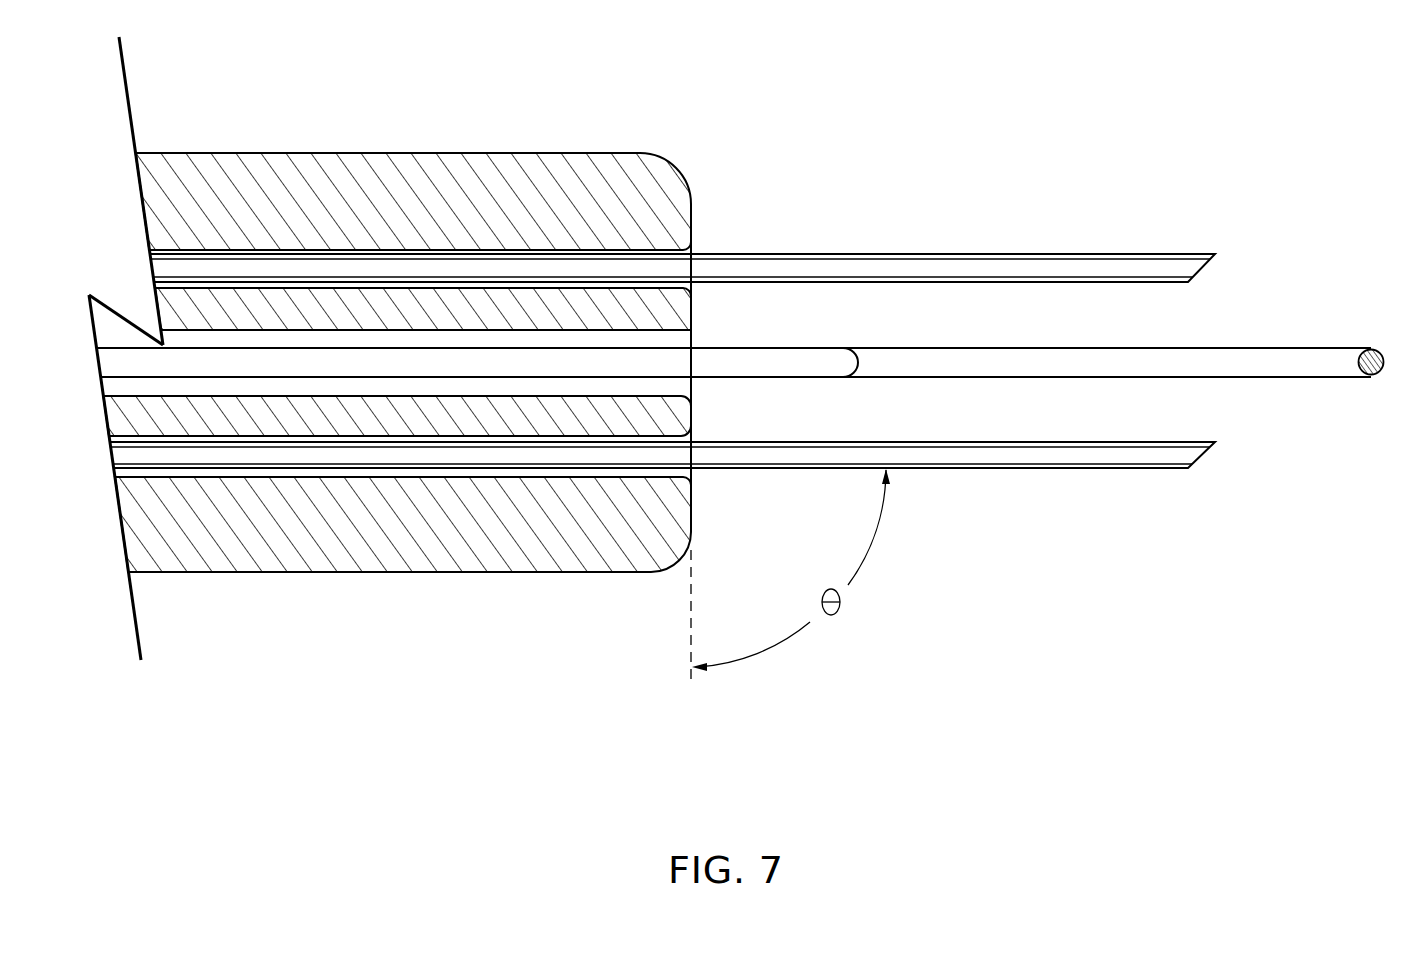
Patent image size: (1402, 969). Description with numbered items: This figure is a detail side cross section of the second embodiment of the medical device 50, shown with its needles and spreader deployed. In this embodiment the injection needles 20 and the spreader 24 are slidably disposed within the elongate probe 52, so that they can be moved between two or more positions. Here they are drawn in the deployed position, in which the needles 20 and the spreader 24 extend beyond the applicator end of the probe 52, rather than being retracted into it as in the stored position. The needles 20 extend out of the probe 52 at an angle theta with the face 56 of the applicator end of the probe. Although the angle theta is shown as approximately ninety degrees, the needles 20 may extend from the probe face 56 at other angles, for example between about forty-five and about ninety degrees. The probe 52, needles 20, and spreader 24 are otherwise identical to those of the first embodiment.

The injection needles 20 is at (942, 254).
The spreader 24 is at (1364, 378).
The medical device 50 is at (736, 346).
The elongate probe 52 is at (247, 555).
The face 56 is at (691, 418).